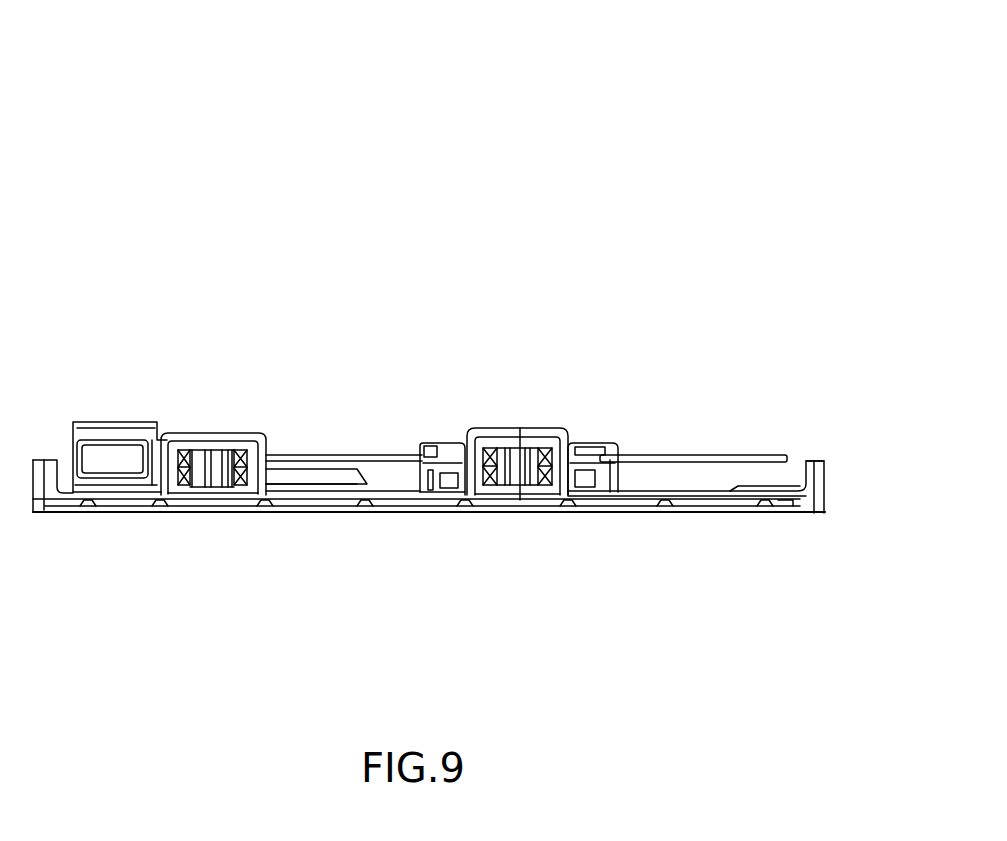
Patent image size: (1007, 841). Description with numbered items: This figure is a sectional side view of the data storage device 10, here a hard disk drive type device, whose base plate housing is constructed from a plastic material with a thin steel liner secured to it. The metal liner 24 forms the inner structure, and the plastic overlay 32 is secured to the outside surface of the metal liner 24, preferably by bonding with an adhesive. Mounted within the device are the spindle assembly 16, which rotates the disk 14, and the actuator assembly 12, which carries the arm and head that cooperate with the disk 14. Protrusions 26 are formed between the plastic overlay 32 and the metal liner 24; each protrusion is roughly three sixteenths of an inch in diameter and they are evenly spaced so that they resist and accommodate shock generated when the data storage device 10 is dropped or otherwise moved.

The data storage device 10 is at (799, 163).
The actuator assembly 12 is at (208, 433).
The disk 14 is at (757, 455).
The spindle assembly 16 is at (520, 428).
The metal liner 24 is at (638, 495).
The protrusions 26 is at (568, 505).
The plastic overlay 32 is at (285, 513).